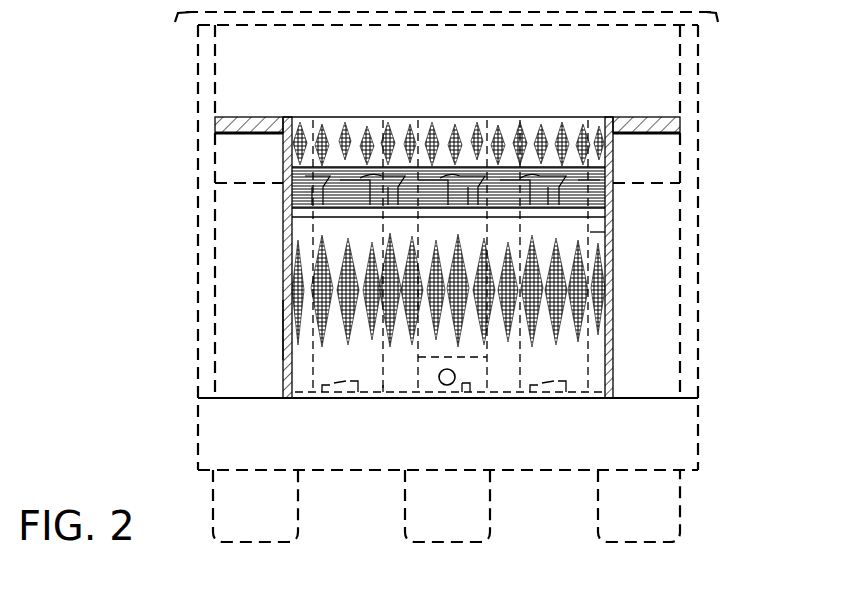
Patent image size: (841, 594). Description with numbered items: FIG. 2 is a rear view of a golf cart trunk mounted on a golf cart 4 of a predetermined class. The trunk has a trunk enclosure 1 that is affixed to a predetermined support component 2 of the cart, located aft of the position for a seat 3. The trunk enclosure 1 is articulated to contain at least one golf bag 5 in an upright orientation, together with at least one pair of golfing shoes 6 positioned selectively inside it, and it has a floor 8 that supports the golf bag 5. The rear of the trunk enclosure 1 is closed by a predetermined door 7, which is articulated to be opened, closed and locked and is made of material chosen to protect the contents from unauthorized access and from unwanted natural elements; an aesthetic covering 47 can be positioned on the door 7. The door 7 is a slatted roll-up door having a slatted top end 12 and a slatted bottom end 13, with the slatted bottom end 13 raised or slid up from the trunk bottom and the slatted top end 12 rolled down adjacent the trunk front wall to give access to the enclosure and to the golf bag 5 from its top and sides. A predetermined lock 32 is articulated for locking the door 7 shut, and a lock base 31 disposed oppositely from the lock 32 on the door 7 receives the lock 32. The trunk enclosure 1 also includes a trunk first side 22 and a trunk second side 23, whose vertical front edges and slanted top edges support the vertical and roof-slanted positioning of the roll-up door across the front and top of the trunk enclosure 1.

The trunk enclosure 1 is at (283, 273).
The support component 2 is at (232, 122).
The seat 3 is at (240, 181).
The golf cart 4 is at (128, 216).
The golf bag 5 is at (590, 232).
The pair of golfing shoes 6 is at (555, 393).
The door 7 is at (528, 273).
The floor 8 is at (385, 398).
The slatted top end 12 is at (447, 118).
The slatted bottom end 13 is at (345, 398).
The trunk first side 22 is at (283, 330).
The trunk second side 23 is at (613, 342).
The lock base 31 is at (455, 358).
The lock 32 is at (447, 377).
The aesthetic covering 47 is at (556, 147).